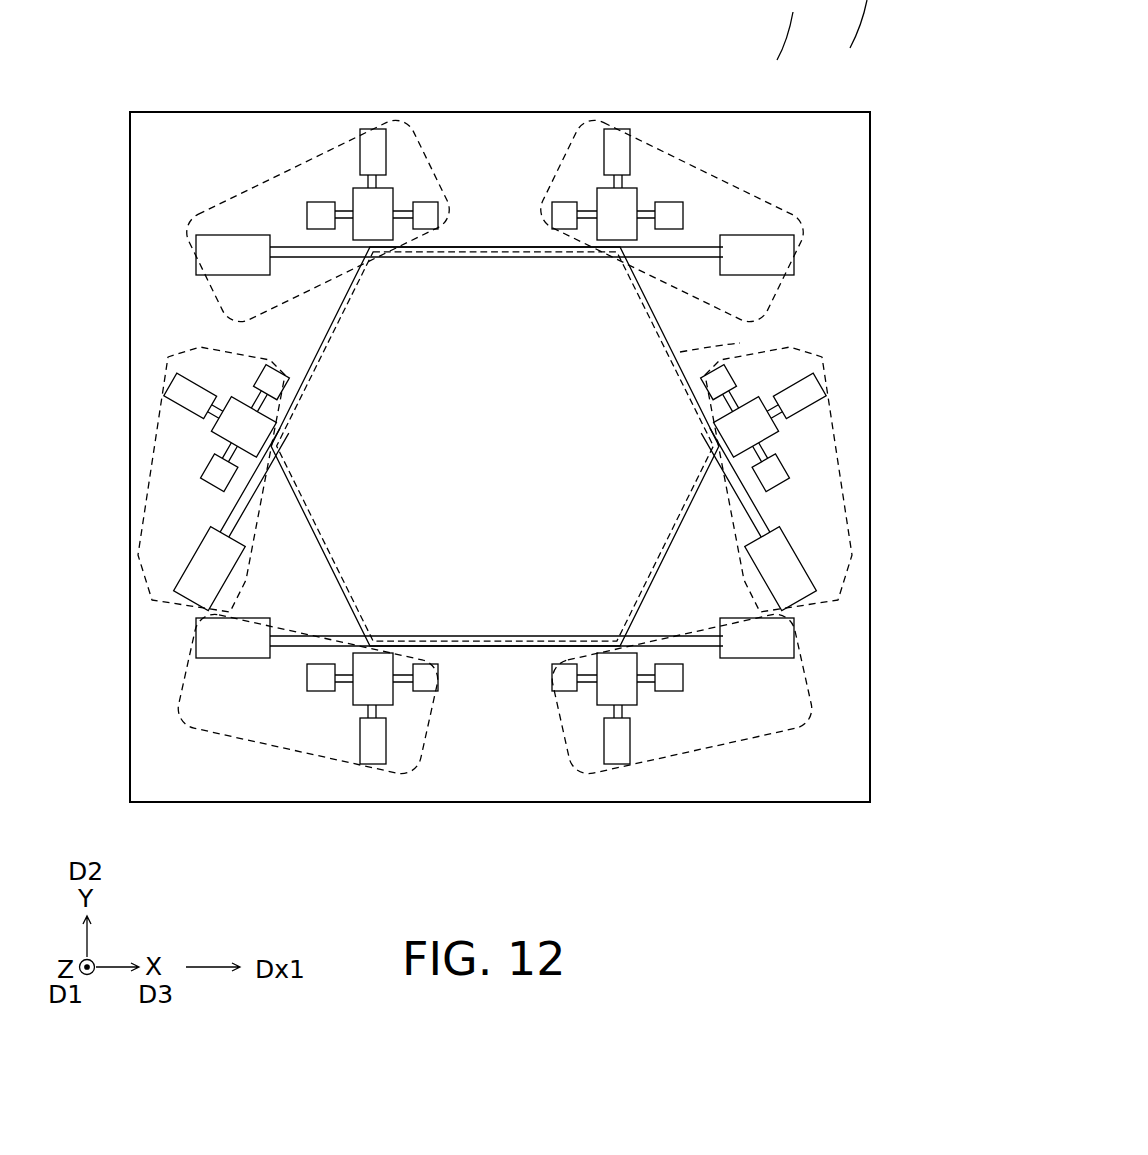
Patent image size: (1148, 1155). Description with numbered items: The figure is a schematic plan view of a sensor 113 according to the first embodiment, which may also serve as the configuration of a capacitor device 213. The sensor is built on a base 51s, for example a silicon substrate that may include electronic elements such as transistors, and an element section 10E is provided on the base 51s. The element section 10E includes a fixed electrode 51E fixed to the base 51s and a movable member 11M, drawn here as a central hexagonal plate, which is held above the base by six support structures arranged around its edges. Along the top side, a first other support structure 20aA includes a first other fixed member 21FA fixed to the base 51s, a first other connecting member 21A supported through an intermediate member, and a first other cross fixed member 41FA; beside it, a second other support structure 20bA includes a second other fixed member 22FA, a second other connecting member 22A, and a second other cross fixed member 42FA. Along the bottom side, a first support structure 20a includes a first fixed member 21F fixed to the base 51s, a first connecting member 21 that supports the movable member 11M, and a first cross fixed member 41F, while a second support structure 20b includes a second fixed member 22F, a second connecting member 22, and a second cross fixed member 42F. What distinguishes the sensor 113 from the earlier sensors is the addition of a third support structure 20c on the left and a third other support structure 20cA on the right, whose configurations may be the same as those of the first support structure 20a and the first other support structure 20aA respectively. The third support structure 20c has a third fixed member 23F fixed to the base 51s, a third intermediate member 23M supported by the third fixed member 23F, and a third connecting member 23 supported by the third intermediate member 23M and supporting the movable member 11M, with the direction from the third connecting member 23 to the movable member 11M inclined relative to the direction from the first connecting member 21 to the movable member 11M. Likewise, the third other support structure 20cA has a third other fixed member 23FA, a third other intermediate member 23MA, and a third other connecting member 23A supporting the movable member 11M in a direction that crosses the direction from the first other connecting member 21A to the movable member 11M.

The element section 10E is at (487, 405).
The sensor 113 is at (809, 31).
The capacitor device 213 is at (884, 25).
The base 51s is at (177, 132).
The fixed electrode 51E is at (680, 352).
The movable member 11M is at (590, 600).
The first other connecting member 21A is at (368, 213).
The first other fixed member 21FA is at (377, 148).
The first other cross fixed member 41FA is at (217, 250).
The first other support structure 20aA is at (257, 180).
The second other connecting member 22A is at (617, 212).
The second other fixed member 22FA is at (620, 153).
The second other cross fixed member 42FA is at (783, 258).
The second other support structure 20bA is at (733, 187).
The third connecting member 23 is at (230, 433).
The third fixed member 23F is at (182, 395).
The third intermediate member 23M is at (205, 408).
The third support structure 20c is at (135, 517).
The third other connecting member 23A is at (753, 427).
The third other fixed member 23FA is at (820, 390).
The third other intermediate member 23MA is at (783, 407).
The third other support structure 20cA is at (860, 530).
The first connecting member 21 is at (365, 683).
The first fixed member 21F is at (370, 745).
The first cross fixed member 41F is at (213, 647).
The first support structure 20a is at (253, 747).
The second connecting member 22 is at (617, 690).
The second fixed member 22F is at (620, 753).
The second cross fixed member 42F is at (787, 650).
The second support structure 20b is at (737, 750).